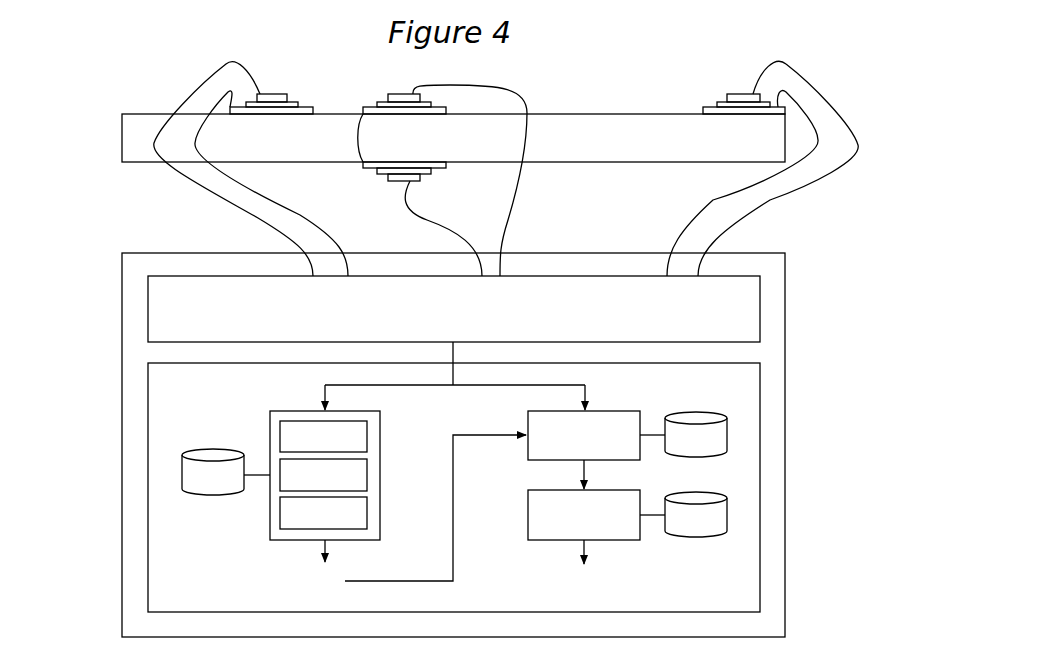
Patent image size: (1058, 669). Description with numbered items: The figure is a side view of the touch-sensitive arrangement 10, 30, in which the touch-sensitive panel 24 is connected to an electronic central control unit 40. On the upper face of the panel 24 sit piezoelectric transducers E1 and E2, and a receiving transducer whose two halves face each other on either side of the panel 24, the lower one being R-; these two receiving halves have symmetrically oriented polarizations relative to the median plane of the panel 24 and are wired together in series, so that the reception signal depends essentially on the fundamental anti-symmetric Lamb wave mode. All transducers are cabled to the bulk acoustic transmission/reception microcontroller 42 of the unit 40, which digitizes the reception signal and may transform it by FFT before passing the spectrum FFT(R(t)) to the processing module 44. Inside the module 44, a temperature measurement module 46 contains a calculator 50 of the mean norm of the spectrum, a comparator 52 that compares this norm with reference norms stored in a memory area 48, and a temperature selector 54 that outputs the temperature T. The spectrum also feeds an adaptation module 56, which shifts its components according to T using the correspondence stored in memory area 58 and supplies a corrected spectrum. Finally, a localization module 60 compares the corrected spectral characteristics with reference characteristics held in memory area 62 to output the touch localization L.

The sensor system 10 is at (447, 147).
The sensor assembly 30 is at (490, 157).
The touch-sensitive panel 24 is at (630, 149).
The electronic central control unit 40 is at (787, 380).
The bulk acoustic volume transmission/reception microcontroller 42 is at (473, 321).
The processing module 44 is at (147, 420).
The temperature measurement module 46 is at (270, 440).
The memory area 48 is at (227, 491).
The mean norm value calculator 50 is at (337, 451).
The comparator 52 is at (337, 489).
The temperature selector 54 is at (337, 527).
The spectrum adaptation module 56 is at (597, 449).
The memory area 58 is at (710, 452).
The localization module 60 is at (597, 529).
The memory area 62 is at (710, 532).
The piezoelectric transducer E1 is at (280, 93).
The piezoelectric transducer E2 is at (733, 93).
The receiving transducer R- is at (380, 174).